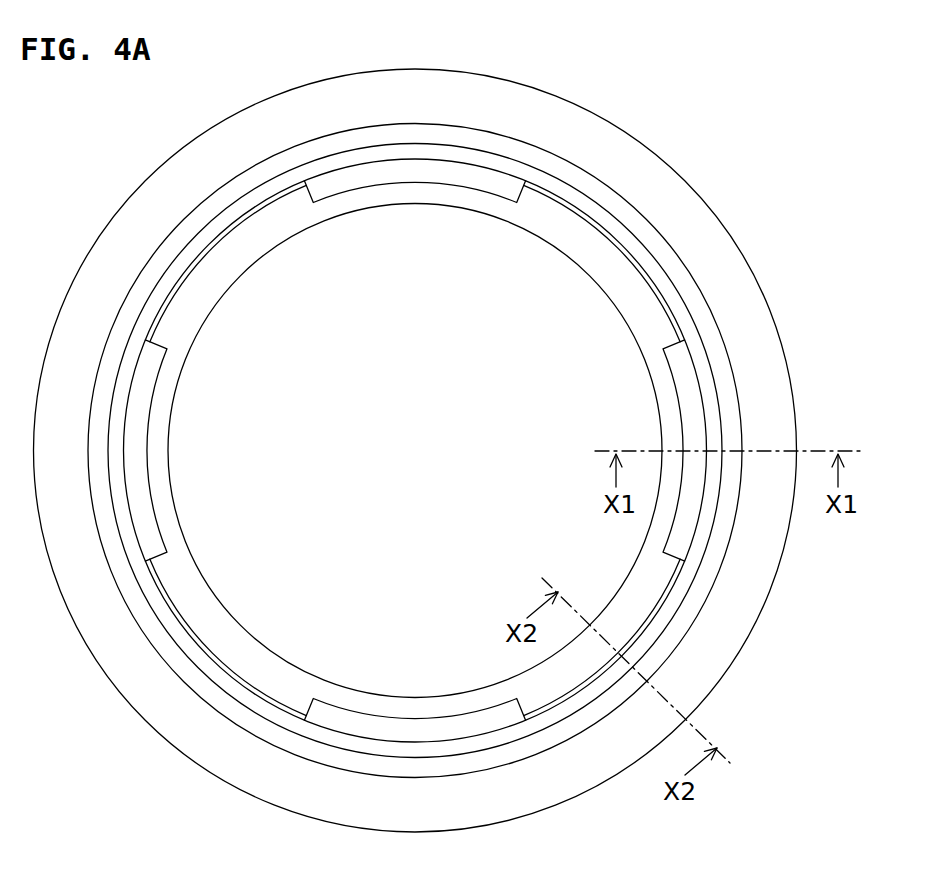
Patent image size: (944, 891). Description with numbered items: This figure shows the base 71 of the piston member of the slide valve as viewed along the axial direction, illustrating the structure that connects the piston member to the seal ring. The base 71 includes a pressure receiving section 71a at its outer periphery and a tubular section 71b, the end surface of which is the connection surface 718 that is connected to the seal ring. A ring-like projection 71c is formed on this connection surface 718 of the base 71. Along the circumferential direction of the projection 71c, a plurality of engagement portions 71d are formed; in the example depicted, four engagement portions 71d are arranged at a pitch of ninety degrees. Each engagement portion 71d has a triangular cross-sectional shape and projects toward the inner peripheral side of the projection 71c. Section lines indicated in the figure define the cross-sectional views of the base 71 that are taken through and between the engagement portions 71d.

The base 71 is at (448, 45).
The pressure receiving section 71a is at (738, 597).
The tubular section 71b is at (557, 733).
The projection 71c is at (218, 225).
The engagement portions 71d is at (421, 180).
The connection surface 718 is at (285, 738).